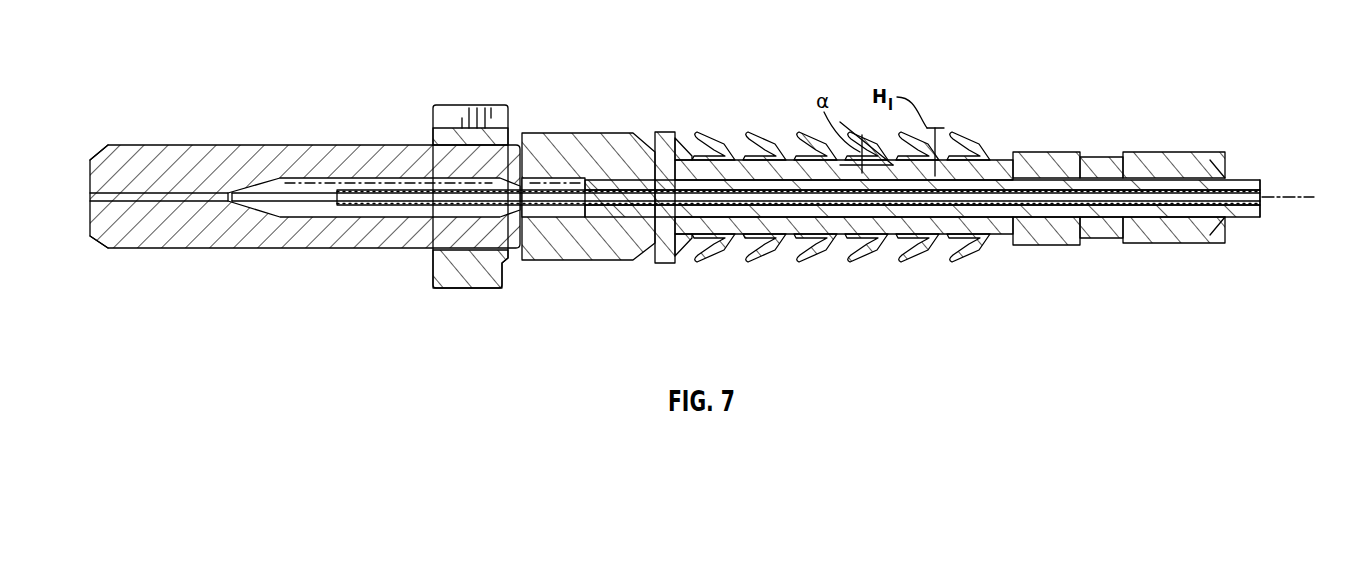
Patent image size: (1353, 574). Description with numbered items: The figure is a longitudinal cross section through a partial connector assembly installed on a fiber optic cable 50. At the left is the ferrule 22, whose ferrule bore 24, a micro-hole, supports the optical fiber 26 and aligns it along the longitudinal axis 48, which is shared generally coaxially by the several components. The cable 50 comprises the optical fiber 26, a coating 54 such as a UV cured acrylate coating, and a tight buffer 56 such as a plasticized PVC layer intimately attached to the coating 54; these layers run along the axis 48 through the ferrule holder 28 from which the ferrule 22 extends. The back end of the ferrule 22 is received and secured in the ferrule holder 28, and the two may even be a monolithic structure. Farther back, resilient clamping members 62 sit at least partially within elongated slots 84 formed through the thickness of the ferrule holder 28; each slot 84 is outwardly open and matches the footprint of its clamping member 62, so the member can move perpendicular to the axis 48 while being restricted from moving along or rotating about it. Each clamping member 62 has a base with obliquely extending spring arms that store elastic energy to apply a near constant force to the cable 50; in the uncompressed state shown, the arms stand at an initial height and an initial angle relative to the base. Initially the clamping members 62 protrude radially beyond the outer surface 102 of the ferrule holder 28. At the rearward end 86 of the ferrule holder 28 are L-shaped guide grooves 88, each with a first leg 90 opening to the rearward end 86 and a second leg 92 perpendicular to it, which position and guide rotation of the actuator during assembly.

The ferrule 22 is at (187, 240).
The ferrule bore 24 is at (90, 197).
The optical fiber 26 is at (298, 202).
The ferrule holder 28 is at (568, 143).
The longitudinal axis 48 is at (1303, 198).
The fiber optic cable 50 is at (1265, 208).
The coating 54 is at (393, 205).
The tight buffer 56 is at (905, 207).
The resilient clamping member 62 is at (768, 143).
The elongated slot 84 is at (652, 228).
The rearward end 86 is at (1210, 150).
The guide groove 88 is at (1127, 215).
The first leg 90 is at (1180, 152).
The second leg 92 is at (1097, 152).
The outer surface 102 is at (1048, 247).